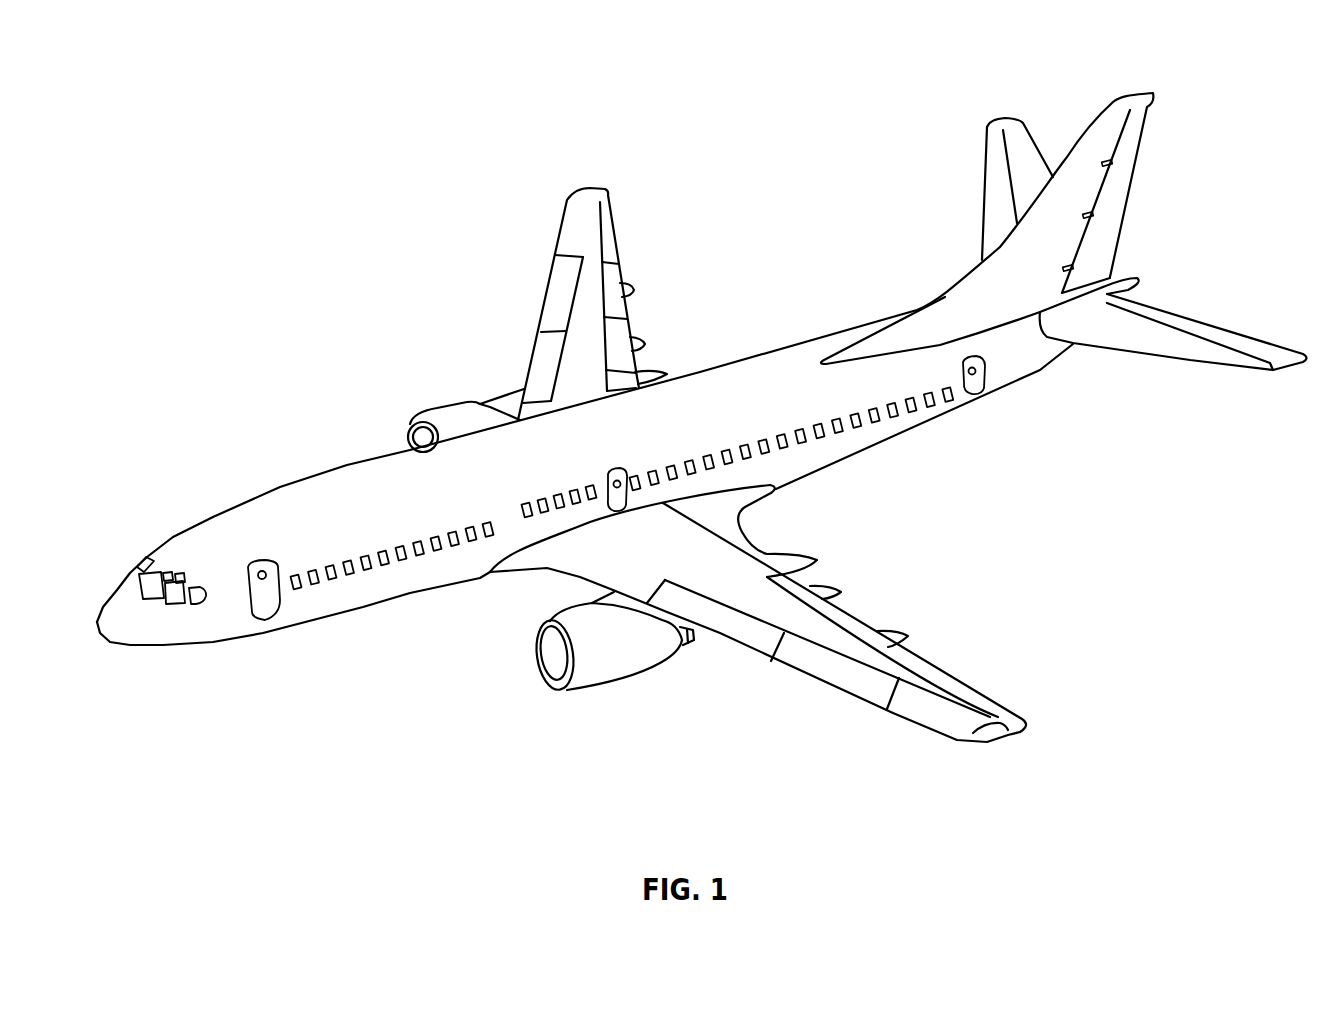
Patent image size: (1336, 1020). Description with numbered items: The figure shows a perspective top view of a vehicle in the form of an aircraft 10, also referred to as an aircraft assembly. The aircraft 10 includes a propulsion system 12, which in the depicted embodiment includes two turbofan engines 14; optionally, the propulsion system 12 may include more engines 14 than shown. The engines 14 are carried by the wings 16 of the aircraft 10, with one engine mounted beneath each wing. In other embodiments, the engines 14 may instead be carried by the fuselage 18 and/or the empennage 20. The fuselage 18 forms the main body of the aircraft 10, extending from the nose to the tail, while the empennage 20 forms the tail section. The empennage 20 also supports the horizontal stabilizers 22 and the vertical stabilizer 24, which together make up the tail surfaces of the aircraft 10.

The aircraft 10 is at (702, 414).
The propulsion system 12 is at (503, 746).
The turbofan engines 14 is at (458, 411).
The wings 16 is at (593, 193).
The fuselage 18 is at (343, 597).
The empennage 20 is at (1045, 207).
The horizontal stabilizers 22 is at (1018, 132).
The vertical stabilizer 24 is at (1115, 110).